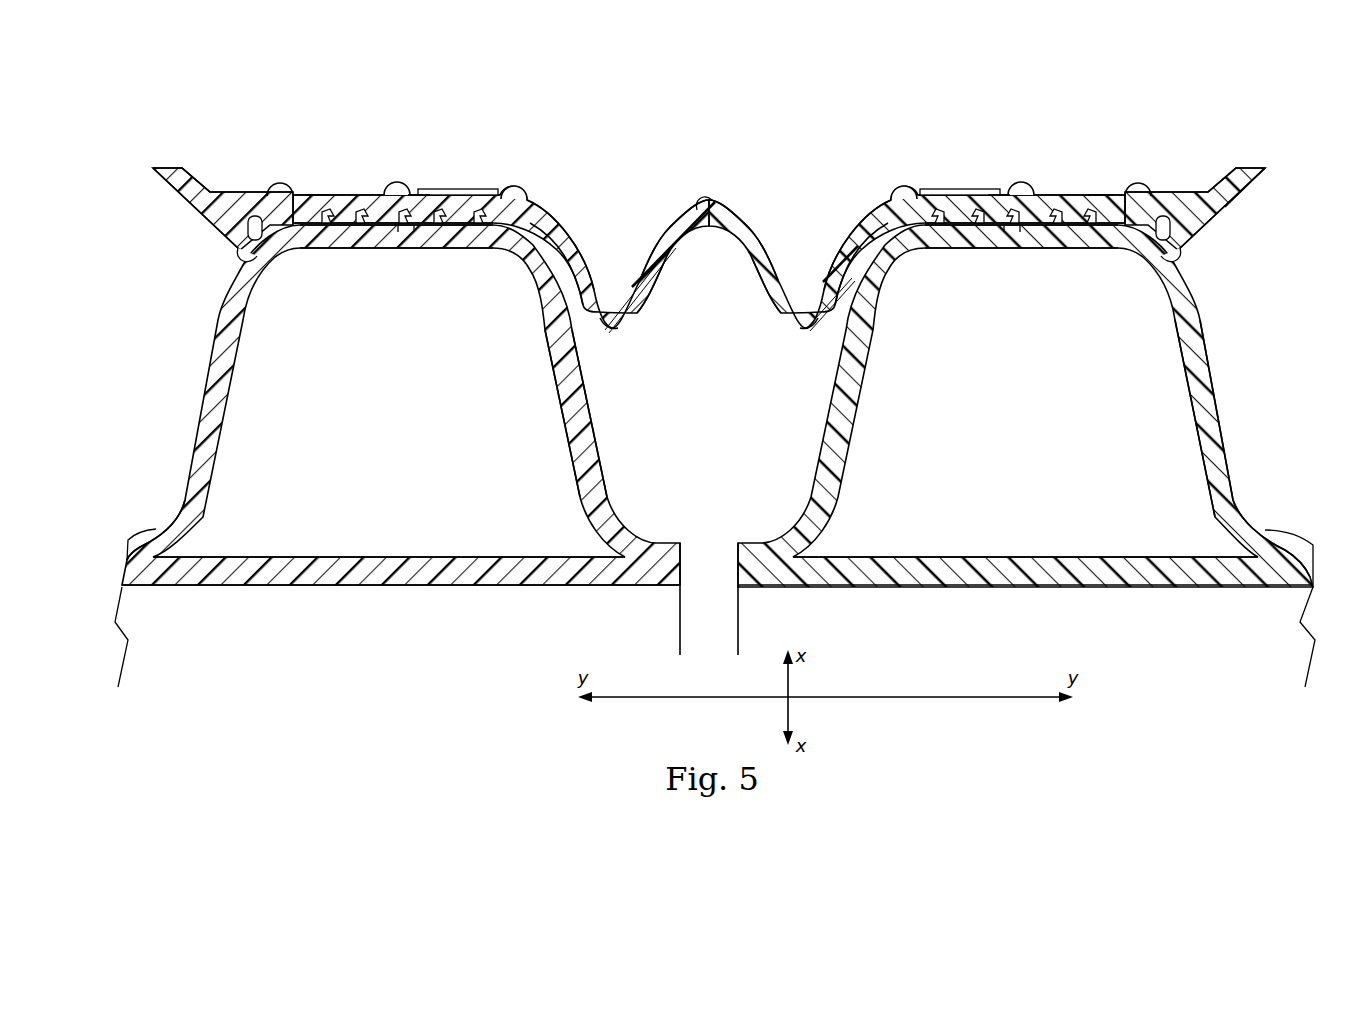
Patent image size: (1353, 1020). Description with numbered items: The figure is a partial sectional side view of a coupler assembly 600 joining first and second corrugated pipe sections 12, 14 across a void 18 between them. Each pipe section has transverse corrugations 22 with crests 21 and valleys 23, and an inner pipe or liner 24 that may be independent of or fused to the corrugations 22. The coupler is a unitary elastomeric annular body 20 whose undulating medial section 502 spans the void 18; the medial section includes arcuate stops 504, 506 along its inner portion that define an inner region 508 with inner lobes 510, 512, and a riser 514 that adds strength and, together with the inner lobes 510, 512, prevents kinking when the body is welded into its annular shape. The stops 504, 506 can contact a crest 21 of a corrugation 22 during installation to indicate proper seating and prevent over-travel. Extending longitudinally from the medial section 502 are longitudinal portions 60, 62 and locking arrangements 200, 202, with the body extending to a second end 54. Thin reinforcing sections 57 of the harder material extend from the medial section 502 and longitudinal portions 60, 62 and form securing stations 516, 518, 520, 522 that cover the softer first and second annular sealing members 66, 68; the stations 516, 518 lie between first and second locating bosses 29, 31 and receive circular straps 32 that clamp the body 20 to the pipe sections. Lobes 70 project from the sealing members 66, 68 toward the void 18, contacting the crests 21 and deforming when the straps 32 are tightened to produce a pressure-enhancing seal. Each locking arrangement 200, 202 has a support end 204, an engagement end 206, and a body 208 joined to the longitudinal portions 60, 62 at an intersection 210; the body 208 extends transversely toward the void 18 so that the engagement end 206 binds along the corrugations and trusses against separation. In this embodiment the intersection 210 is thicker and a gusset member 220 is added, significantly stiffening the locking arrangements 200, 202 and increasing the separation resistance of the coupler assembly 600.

The first pipe section 12 is at (163, 373).
The second pipe section 14 is at (1236, 455).
The void 18 is at (698, 643).
The annular body 20 is at (562, 225).
The crest 21 is at (300, 240).
The transverse corrugation 22 is at (585, 398).
The valley 23 is at (166, 522).
The inner pipe or liner 24 is at (398, 582).
The first locating boss 29 is at (388, 184).
The second locating boss 31 is at (281, 182).
The circular strap 32 is at (483, 188).
The second end 54 is at (1253, 185).
The reinforcing section 57 is at (350, 195).
The longitudinal portion 60 is at (255, 192).
The longitudinal portion 62 is at (1162, 192).
The first annular sealing member 66 is at (408, 228).
The second annular sealing member 68 is at (1010, 228).
The lobe 70 is at (363, 232).
The locking arrangement 200 is at (128, 151).
The locking arrangement 202 is at (1282, 131).
The support end 204 is at (176, 167).
The engagement end 206 is at (236, 258).
The body 208 is at (188, 208).
The intersection 210 is at (227, 192).
The gusset member 220 is at (265, 248).
The undulating medial section 502 is at (757, 243).
The arcuate stop 504 is at (565, 268).
The arcuate stop 506 is at (853, 268).
The inner region 508 is at (690, 456).
The inner lobe 510 is at (608, 330).
The inner lobe 512 is at (810, 330).
The riser 514 is at (668, 240).
The securing station 516 is at (418, 194).
The securing station 518 is at (1015, 194).
The securing station 520 is at (310, 195).
The securing station 522 is at (1115, 195).
The coupler assembly 600 is at (1187, 108).